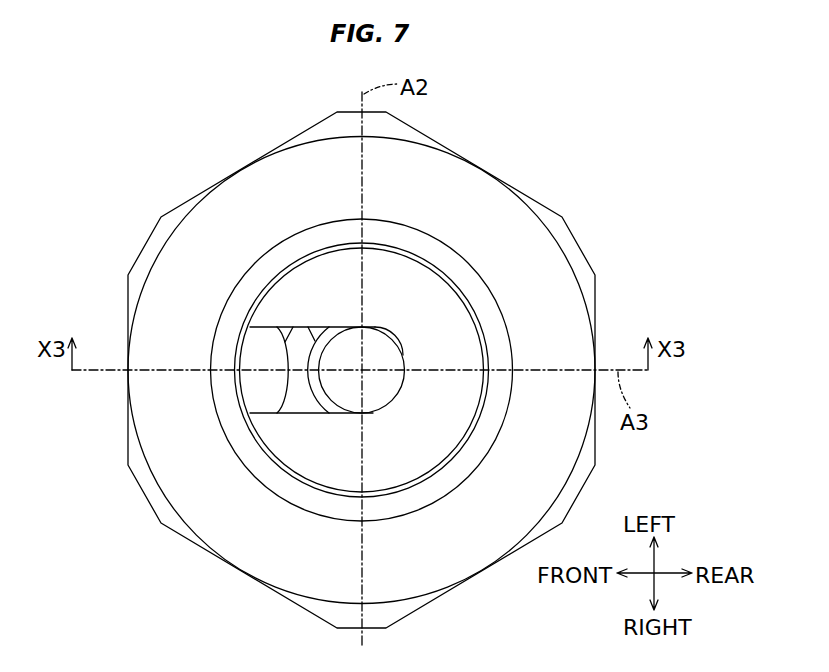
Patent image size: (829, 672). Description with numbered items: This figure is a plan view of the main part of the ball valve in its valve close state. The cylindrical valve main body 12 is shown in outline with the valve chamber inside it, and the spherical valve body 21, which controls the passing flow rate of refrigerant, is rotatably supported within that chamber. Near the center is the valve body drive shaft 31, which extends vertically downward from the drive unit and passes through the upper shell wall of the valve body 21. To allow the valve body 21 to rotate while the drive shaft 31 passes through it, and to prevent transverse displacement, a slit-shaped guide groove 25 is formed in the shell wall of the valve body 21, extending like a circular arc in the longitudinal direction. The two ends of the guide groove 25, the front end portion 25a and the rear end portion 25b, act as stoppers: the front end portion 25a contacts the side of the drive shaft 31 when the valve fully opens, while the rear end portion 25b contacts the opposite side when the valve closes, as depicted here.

The valve main body 12 is at (477, 188).
The valve body 21 is at (312, 447).
The guide groove 25 is at (283, 342).
The front end portion 25a is at (283, 388).
The rear end portion 25b is at (375, 327).
The valve body drive shaft 31 is at (397, 400).